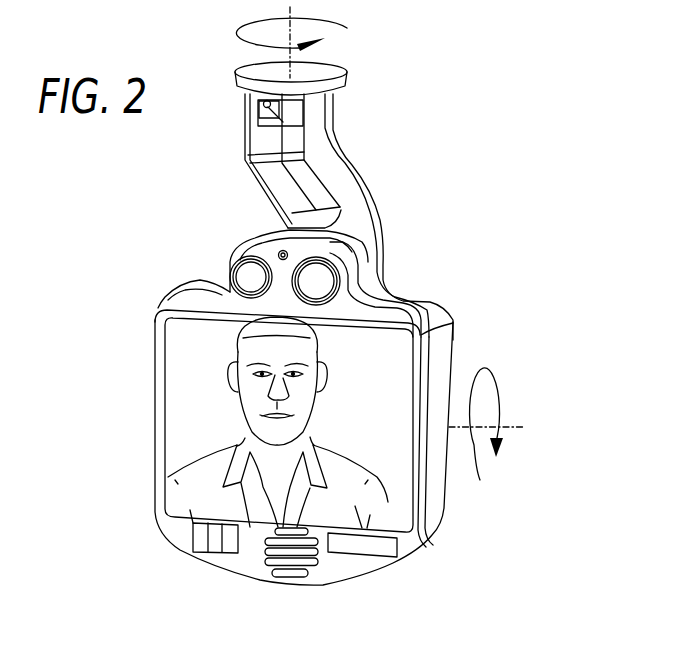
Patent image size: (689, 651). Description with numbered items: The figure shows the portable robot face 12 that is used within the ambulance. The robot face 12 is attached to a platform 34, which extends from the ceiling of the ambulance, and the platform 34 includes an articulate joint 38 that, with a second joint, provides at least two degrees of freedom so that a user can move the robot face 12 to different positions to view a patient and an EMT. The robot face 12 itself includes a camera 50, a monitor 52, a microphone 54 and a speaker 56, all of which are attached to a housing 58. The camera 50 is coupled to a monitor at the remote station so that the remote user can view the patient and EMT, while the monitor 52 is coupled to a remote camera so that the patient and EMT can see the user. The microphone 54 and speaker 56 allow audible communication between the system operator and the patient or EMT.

The portable robot face 12 is at (452, 556).
The platform 34 is at (350, 195).
The articulate joint 38 is at (283, 122).
The camera 50 is at (322, 288).
The monitor 52 is at (197, 395).
The microphone 54 is at (282, 254).
The speaker 56 is at (293, 555).
The housing 58 is at (344, 566).